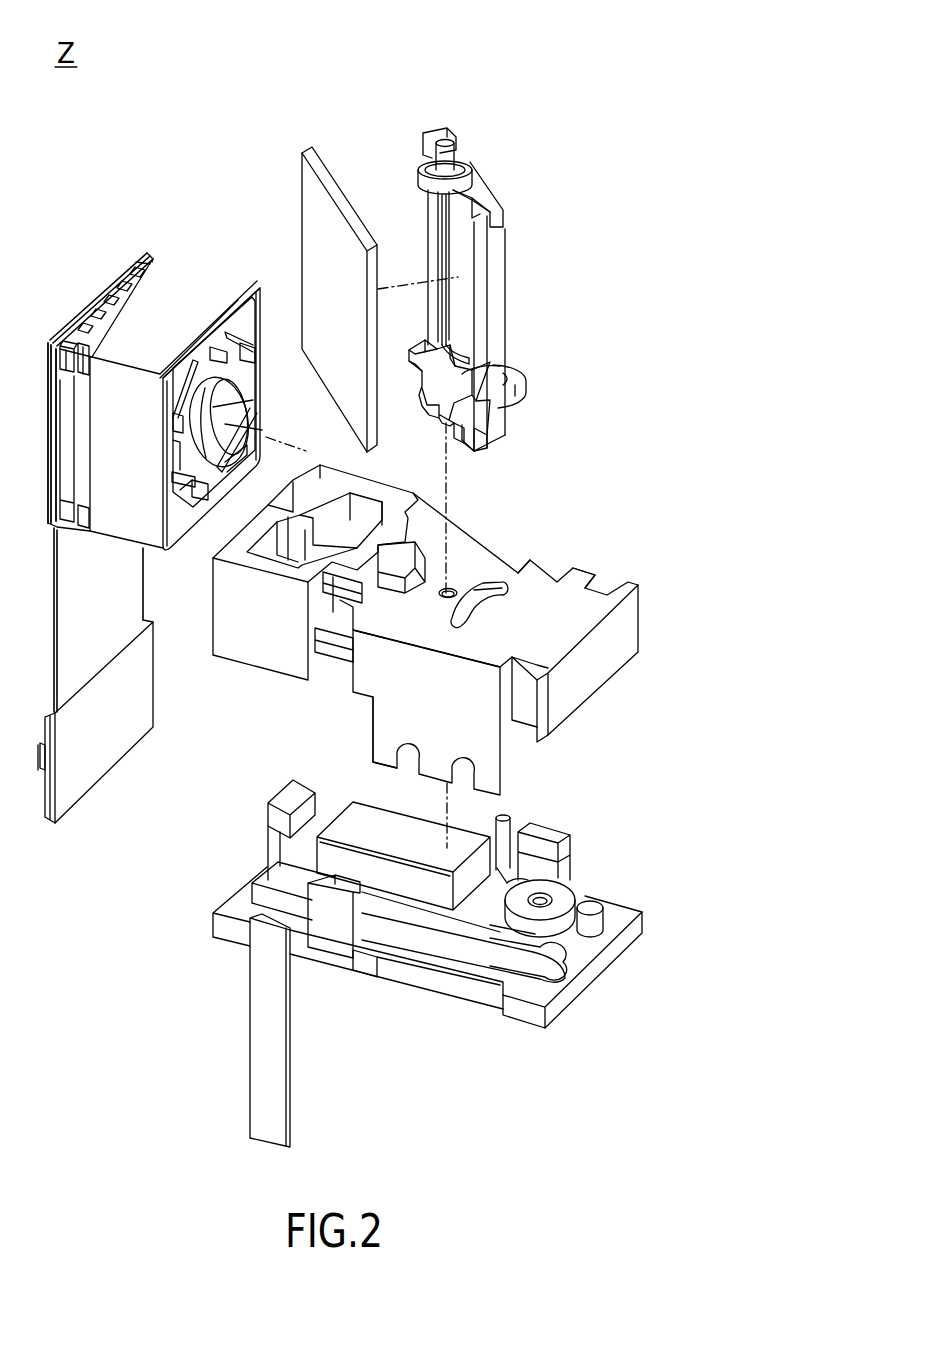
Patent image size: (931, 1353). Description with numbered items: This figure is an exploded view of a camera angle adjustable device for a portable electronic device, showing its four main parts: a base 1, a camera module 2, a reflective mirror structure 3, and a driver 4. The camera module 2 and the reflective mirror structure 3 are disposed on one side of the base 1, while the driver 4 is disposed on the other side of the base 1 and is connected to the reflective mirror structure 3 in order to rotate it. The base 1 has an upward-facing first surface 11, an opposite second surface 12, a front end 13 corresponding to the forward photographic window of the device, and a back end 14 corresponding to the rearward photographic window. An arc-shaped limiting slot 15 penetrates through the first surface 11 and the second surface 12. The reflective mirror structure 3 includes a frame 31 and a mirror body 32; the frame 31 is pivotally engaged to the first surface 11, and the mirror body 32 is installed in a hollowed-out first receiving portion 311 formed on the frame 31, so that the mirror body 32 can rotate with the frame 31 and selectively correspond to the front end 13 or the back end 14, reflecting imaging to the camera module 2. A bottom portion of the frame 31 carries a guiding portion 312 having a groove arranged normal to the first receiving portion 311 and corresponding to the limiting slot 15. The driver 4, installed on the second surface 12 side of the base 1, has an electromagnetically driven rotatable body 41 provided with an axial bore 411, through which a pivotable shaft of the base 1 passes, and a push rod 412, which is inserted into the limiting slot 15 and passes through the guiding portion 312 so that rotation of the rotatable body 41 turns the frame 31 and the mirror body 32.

The base 1 is at (598, 561).
The first surface 11 is at (544, 600).
The second surface 12 is at (337, 670).
The front end 13 is at (518, 571).
The back end 14 is at (387, 713).
The limiting slot 15 is at (466, 588).
The camera module 2 is at (214, 254).
The reflective mirror structure 3 is at (405, 76).
The frame 31 is at (435, 133).
The first receiving portion 311 is at (469, 313).
The guiding portion 312 is at (526, 393).
The mirror body 32 is at (310, 148).
The driver 4 is at (631, 890).
The rotatable body 41 is at (555, 922).
The axial bore 411 is at (542, 898).
The push rod 412 is at (504, 818).